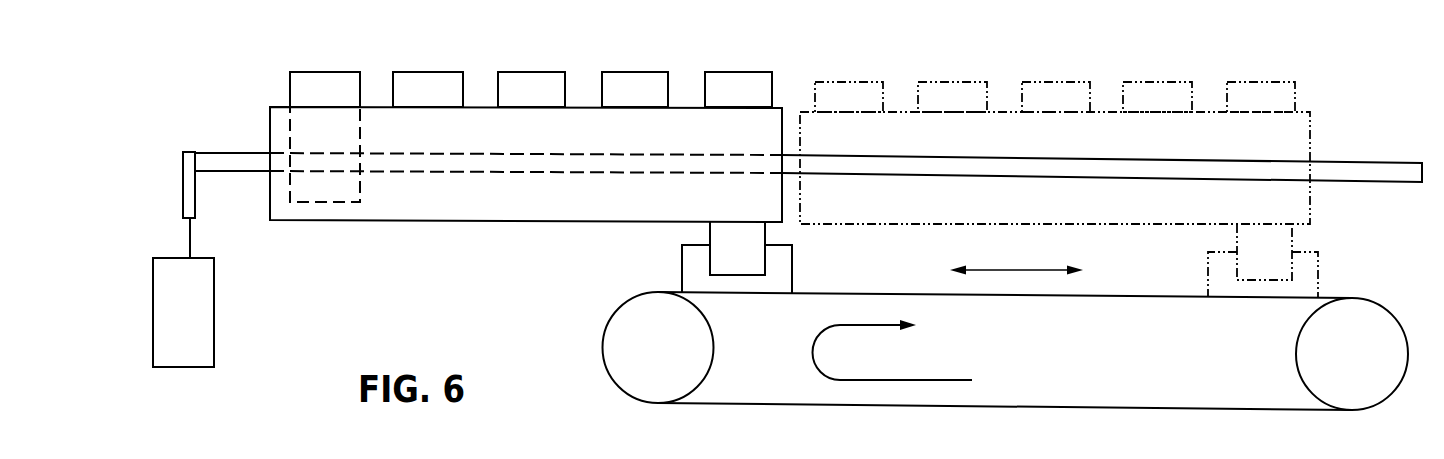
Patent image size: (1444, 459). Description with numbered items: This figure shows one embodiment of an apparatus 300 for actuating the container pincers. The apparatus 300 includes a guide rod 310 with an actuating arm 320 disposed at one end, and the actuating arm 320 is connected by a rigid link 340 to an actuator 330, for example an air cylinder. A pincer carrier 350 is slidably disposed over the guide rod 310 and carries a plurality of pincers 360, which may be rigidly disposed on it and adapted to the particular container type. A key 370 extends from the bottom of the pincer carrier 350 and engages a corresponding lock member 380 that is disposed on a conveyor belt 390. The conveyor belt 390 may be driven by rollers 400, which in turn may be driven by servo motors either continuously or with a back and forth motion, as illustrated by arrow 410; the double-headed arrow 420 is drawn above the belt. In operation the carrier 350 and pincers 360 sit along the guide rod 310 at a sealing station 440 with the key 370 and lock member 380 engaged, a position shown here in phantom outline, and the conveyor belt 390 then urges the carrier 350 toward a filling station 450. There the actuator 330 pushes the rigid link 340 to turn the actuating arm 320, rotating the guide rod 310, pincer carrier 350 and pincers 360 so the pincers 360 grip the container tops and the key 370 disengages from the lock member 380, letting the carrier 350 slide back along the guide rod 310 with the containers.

The apparatus 300 is at (458, 310).
The guide rod 310 is at (1338, 163).
The actuating arm 320 is at (192, 188).
The actuator 330 is at (196, 343).
The rigid link 340 is at (192, 233).
The pincer carrier 350 is at (526, 164).
The pincers 360 is at (433, 72).
The key 370 is at (750, 240).
The lock member 380 is at (688, 263).
The conveyor belt 390 is at (977, 405).
The rollers 400 is at (666, 359).
The arrow 410 is at (912, 380).
The reciprocating movement direction 420 is at (1016, 258).
The sealing station 440 is at (1225, 52).
The filling station 450 is at (492, 40).